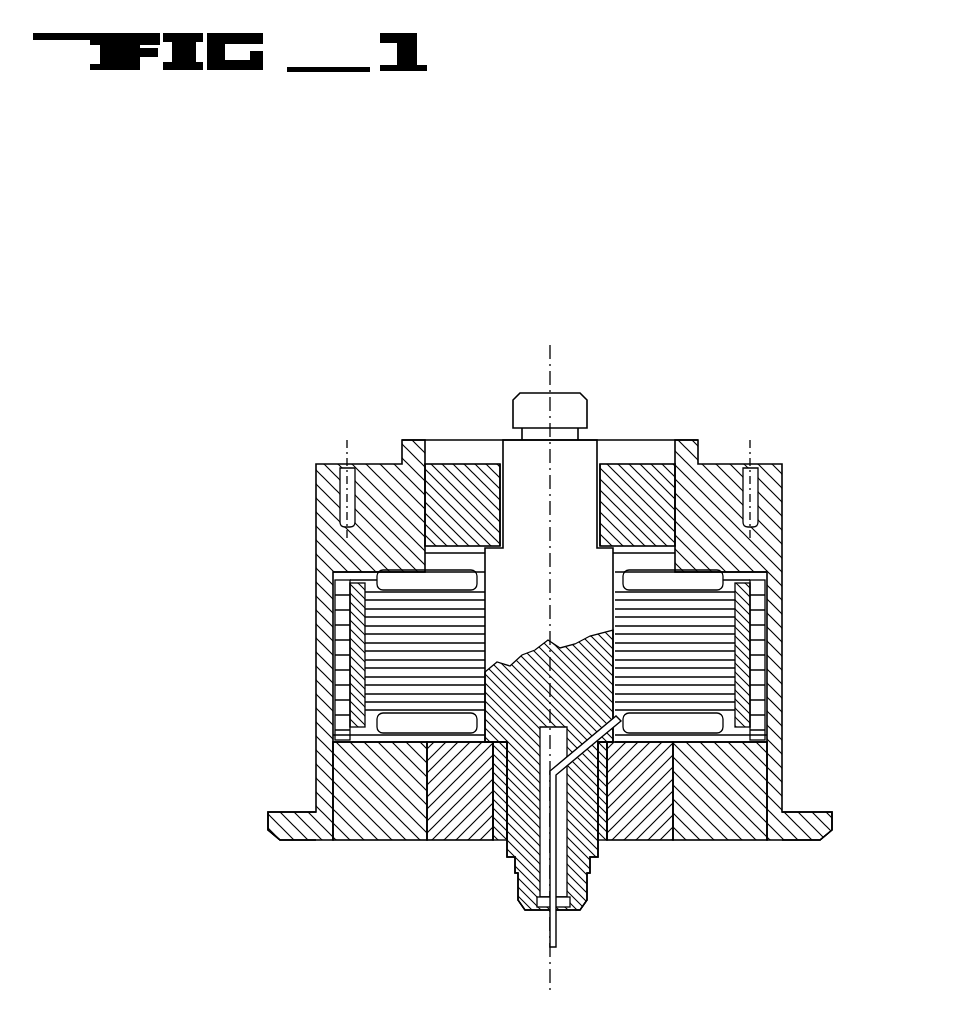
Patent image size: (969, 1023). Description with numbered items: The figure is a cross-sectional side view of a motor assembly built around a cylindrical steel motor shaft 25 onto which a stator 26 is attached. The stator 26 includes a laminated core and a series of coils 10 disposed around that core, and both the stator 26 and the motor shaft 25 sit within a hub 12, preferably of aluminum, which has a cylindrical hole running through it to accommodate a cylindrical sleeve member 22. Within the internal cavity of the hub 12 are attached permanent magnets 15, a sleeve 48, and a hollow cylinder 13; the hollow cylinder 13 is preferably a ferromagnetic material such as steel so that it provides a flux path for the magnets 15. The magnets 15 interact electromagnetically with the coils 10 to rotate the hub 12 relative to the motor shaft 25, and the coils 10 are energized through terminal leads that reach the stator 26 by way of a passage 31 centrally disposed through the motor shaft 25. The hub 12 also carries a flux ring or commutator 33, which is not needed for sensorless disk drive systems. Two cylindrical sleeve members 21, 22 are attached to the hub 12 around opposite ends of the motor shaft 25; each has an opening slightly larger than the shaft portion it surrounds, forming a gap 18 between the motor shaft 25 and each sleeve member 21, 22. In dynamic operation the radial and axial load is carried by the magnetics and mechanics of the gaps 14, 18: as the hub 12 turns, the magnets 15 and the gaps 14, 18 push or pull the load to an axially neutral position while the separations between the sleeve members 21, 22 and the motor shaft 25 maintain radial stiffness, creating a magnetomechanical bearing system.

The coils 10 is at (707, 725).
The hub 12 is at (380, 460).
The hollow cylinder 13 is at (762, 593).
The gap 14 is at (478, 490).
The permanent magnets 15 is at (742, 630).
The gap 18 is at (500, 495).
The sleeve member 21 is at (445, 820).
The sleeve member 22 is at (443, 477).
The motor shaft 25 is at (537, 392).
The stator 26 is at (718, 657).
The passage 31 is at (541, 910).
The flux ring or commutator 33 is at (297, 838).
The sleeve 48 is at (375, 817).